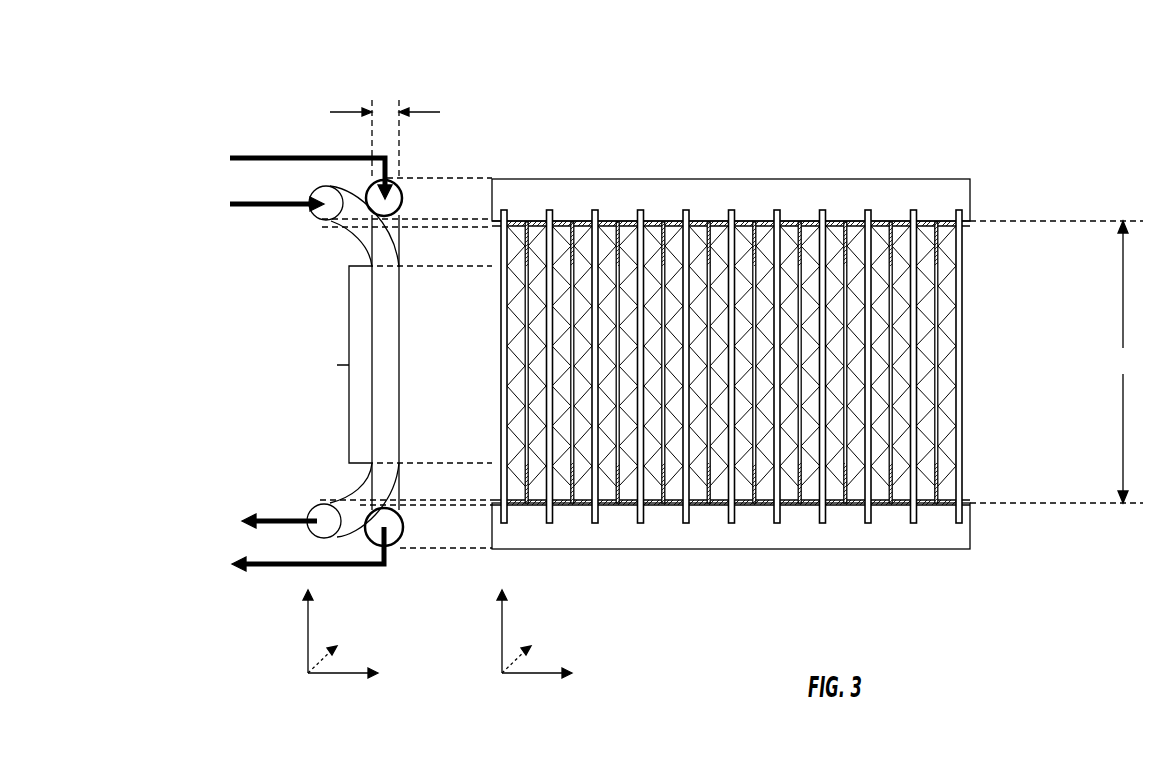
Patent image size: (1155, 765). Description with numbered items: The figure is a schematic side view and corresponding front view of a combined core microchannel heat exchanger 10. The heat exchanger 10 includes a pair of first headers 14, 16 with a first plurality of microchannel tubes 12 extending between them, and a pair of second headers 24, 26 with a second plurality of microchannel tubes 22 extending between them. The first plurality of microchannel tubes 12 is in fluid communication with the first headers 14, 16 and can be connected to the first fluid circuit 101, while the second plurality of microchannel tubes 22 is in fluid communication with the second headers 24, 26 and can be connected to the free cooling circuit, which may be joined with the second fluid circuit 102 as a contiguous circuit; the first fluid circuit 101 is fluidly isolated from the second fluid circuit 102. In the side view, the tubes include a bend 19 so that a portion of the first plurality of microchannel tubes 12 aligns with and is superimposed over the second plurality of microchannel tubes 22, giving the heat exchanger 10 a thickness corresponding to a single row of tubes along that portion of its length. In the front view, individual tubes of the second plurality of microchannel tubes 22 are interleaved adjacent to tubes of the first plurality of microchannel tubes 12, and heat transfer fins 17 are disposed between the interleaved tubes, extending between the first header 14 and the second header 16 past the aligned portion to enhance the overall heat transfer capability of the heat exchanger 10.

The combined core microchannel heat exchanger 10 is at (305, 143).
The first plurality of microchannel tubes 12 is at (549, 211).
The first header 14 is at (403, 194).
The second header 16 is at (403, 533).
The heat transfer fins 17 is at (958, 337).
The bend 19 is at (351, 245).
The second plurality of microchannel tubes 22 is at (845, 505).
The second header 24 is at (321, 217).
The second header 26 is at (318, 503).
The first fluid circuit 101 is at (250, 156).
The second fluid circuit 102 is at (257, 203).